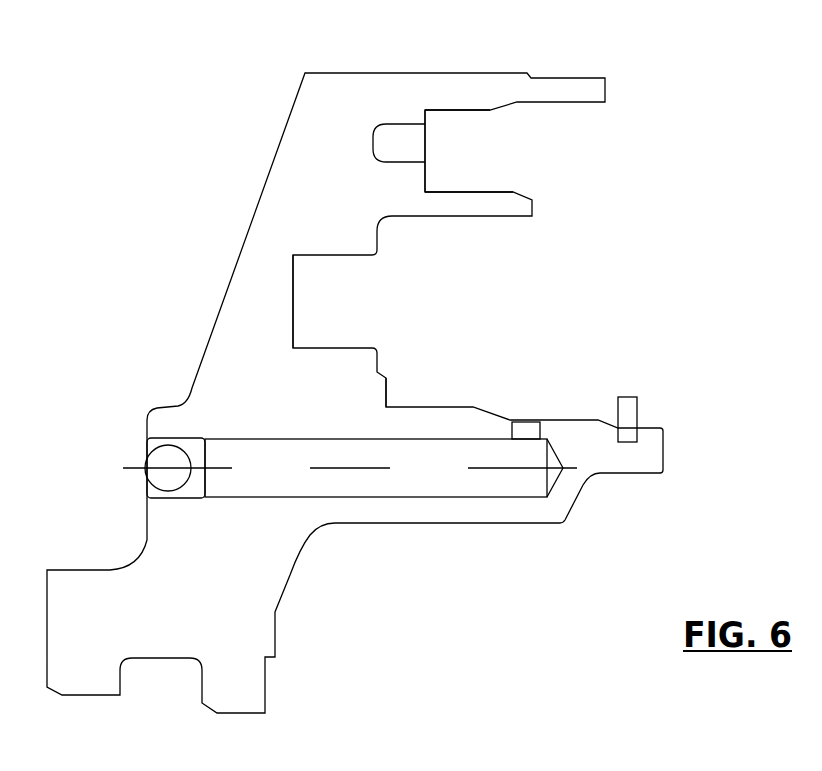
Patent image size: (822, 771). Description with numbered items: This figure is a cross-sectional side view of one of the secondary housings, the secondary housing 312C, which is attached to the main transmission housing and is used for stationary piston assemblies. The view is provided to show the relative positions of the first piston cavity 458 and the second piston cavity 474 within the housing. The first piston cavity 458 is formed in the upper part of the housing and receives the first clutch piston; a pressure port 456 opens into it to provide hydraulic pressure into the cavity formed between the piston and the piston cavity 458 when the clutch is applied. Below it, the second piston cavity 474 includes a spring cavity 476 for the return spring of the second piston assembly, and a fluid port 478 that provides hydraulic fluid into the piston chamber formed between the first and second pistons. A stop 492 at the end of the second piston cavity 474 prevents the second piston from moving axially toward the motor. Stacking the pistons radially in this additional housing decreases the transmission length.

The secondary housing 312C is at (467, 73).
The pressure port 456 is at (390, 131).
The piston cavity 458 is at (462, 146).
The piston cavity 474 is at (490, 332).
The spring cavity 476 is at (315, 298).
The fluid port 478 is at (527, 430).
The stop 492 is at (630, 412).